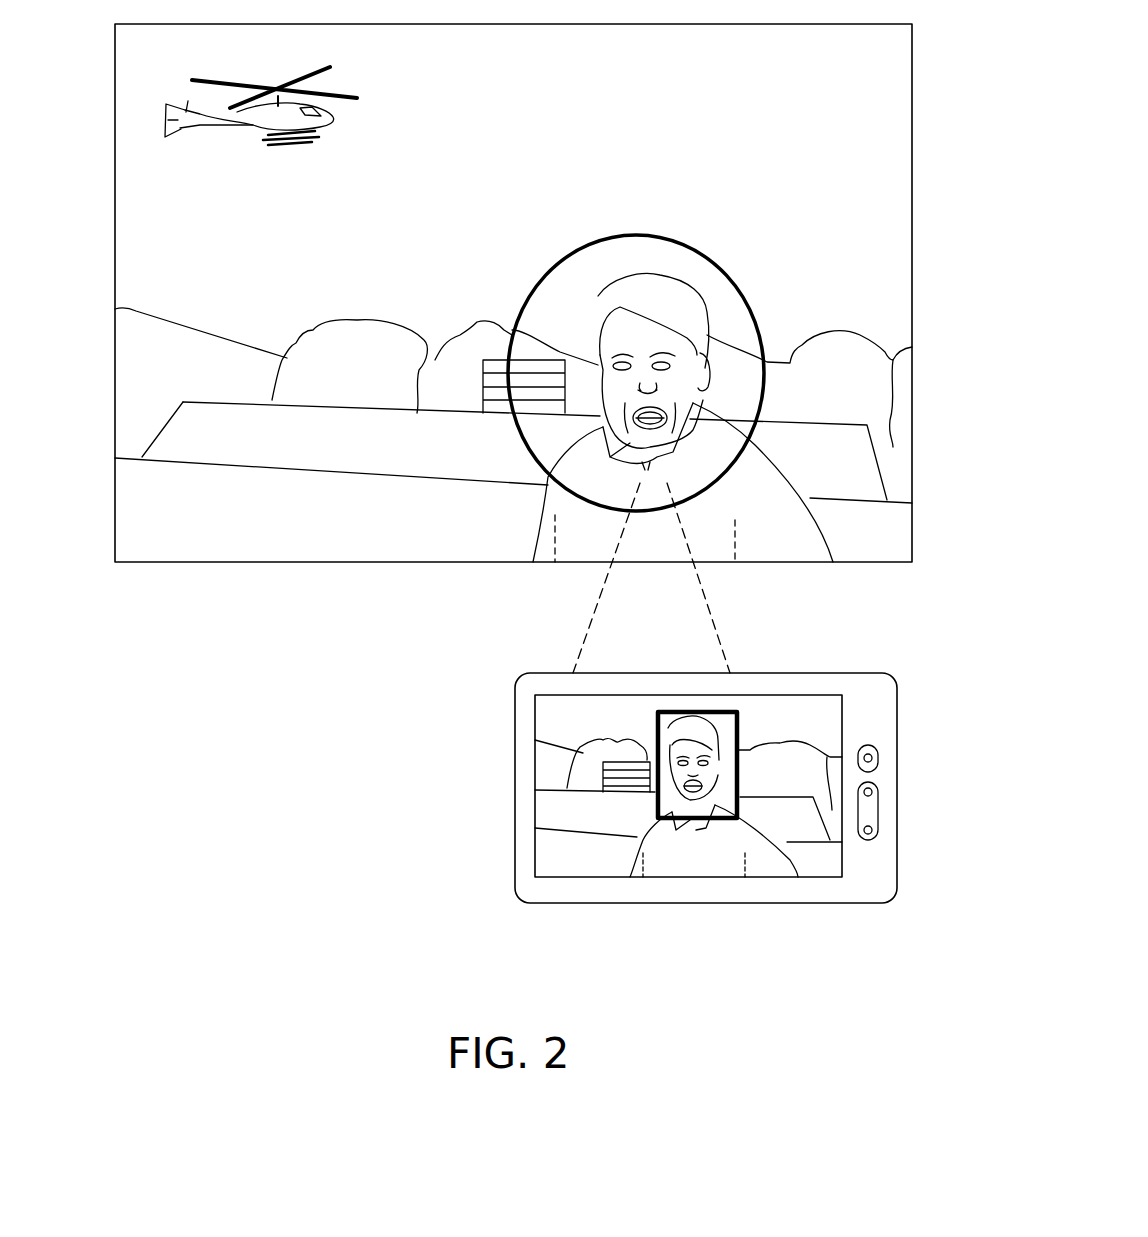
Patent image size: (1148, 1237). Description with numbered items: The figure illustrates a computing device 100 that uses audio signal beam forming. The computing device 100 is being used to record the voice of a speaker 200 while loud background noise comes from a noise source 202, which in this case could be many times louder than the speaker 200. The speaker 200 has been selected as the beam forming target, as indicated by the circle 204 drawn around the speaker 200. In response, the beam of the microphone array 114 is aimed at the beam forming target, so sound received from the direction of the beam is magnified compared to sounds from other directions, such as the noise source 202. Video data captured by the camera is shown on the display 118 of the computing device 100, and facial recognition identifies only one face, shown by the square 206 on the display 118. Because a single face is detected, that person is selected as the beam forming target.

The computing device 100 is at (608, 903).
The microphone array 114 is at (732, 673).
The display 118 is at (767, 878).
The speaker 200 is at (796, 457).
The noise source 202 is at (333, 122).
The circle 204 is at (642, 235).
The square 206 is at (737, 722).